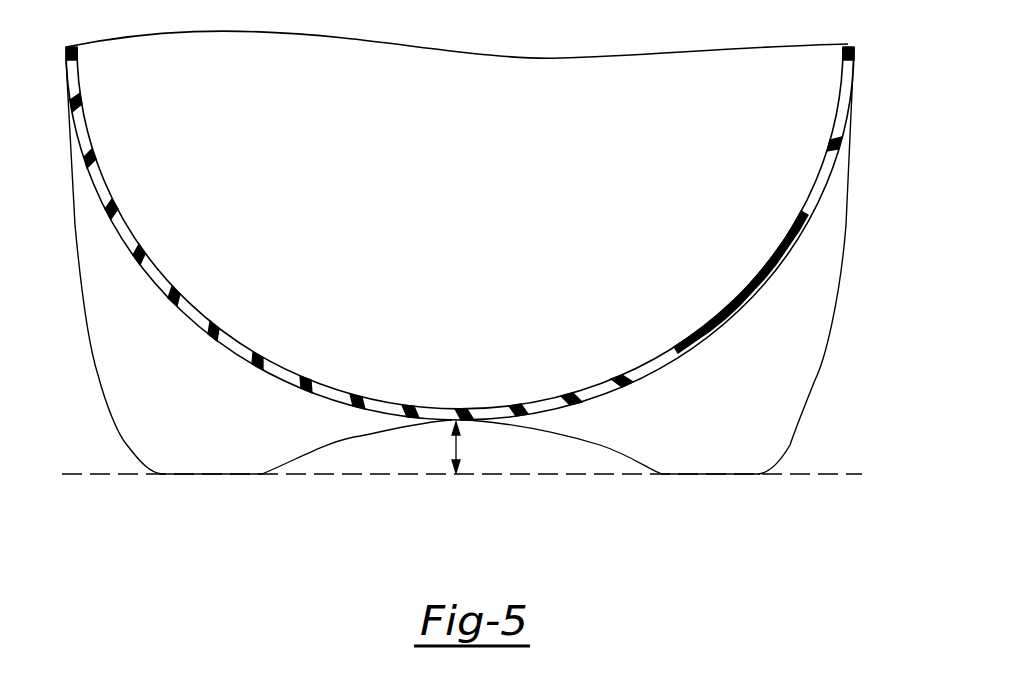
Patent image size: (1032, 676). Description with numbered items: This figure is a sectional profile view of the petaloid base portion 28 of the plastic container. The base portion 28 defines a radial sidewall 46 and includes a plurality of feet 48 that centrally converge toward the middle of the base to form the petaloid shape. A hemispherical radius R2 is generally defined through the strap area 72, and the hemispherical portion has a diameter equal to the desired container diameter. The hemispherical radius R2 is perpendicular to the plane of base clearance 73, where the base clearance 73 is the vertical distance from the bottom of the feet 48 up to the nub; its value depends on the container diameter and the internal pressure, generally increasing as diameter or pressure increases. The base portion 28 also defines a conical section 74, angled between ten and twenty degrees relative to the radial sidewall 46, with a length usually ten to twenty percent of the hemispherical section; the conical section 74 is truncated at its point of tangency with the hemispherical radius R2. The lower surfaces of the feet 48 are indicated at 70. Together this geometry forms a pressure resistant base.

The base portion 28 is at (76, 298).
The radial sidewall 46 is at (855, 70).
The feet 48 is at (131, 357).
The bottom surface 70 is at (160, 424).
The strap area 72 is at (652, 373).
The base clearance 73 is at (462, 450).
The conical section 74 is at (852, 109).
The hemispherical radius R2 is at (733, 313).